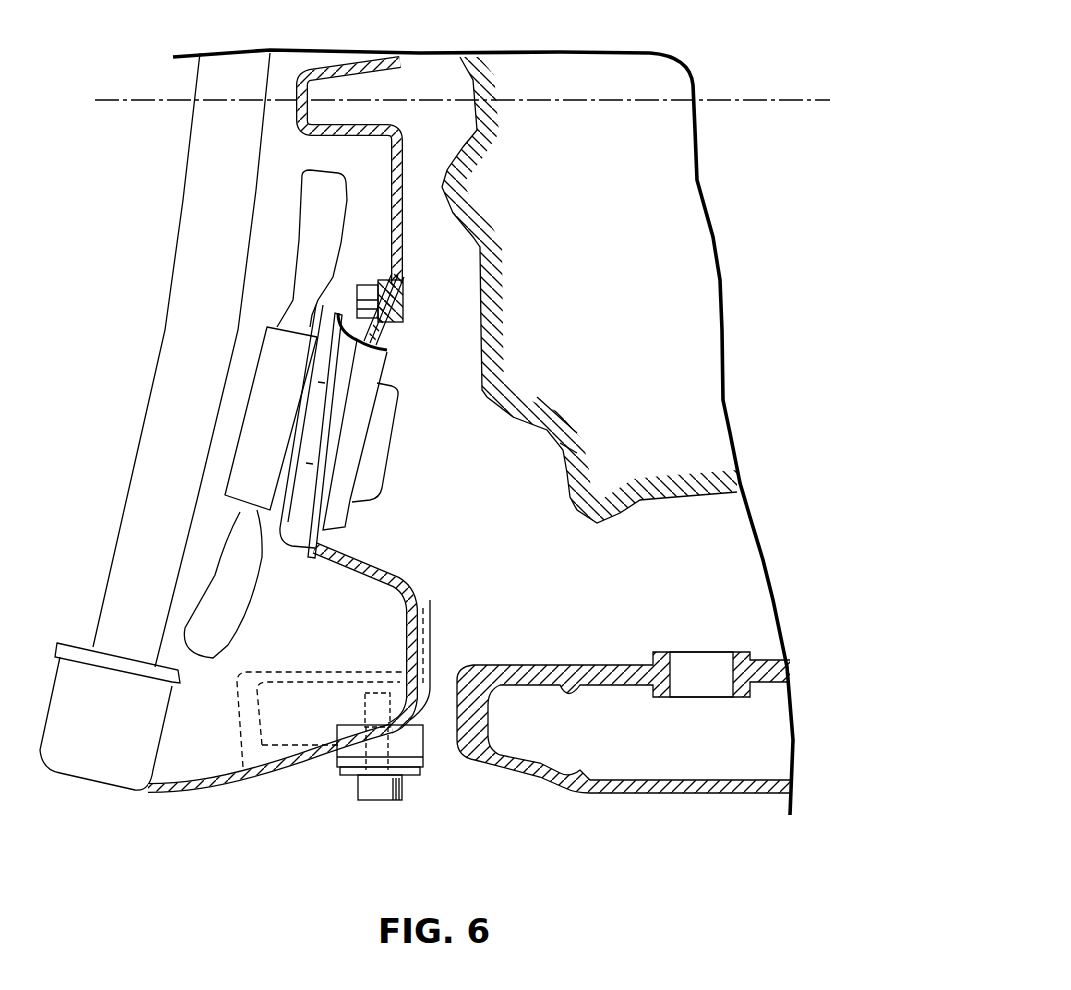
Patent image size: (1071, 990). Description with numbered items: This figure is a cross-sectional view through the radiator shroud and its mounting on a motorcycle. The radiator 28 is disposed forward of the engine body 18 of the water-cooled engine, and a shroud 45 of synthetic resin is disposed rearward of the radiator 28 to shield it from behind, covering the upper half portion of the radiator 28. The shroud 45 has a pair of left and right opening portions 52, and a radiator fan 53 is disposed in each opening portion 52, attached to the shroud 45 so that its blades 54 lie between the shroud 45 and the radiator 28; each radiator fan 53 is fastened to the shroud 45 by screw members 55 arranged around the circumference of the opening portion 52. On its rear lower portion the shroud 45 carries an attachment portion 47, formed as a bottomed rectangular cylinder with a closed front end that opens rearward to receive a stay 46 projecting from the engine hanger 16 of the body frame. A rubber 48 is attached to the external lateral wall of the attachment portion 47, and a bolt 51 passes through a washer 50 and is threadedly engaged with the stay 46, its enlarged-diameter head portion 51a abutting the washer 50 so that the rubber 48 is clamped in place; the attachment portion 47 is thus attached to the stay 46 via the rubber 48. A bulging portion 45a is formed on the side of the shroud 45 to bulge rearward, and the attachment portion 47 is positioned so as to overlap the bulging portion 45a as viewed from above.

The engine hanger 16 is at (603, 672).
The engine body 18 is at (606, 300).
The radiator 28 is at (188, 315).
The shroud 45 is at (400, 243).
The bulging portion 45a is at (420, 598).
The stay 46 is at (352, 700).
The attachment portion 47 is at (427, 750).
The rubber 48 is at (340, 760).
The washer 50 is at (347, 774).
The bolt 51 is at (377, 690).
The enlarged-diameter head portion 51a is at (398, 790).
The opening portion 52 is at (380, 335).
The radiator fan 53 is at (360, 438).
The blade 54 is at (313, 216).
The screw member 55 is at (359, 285).